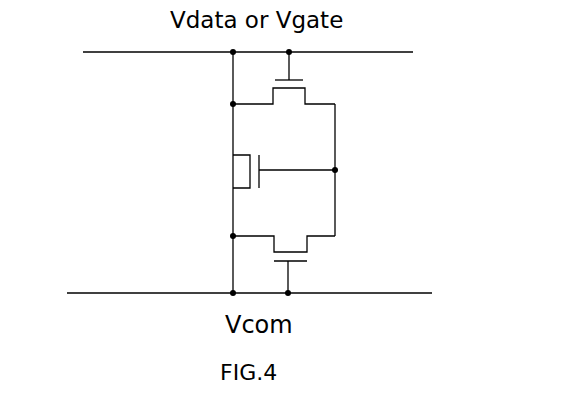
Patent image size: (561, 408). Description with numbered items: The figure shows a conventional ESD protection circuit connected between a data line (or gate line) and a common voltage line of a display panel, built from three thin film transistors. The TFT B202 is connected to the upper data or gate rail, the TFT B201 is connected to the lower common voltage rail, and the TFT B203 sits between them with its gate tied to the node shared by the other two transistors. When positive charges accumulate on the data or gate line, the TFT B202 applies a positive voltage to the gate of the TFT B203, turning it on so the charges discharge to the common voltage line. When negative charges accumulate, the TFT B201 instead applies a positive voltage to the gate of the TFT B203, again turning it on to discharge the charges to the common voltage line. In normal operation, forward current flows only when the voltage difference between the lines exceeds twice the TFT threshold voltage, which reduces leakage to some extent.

The TFT B202 is at (316, 80).
The TFT B203 is at (228, 172).
The TFT B201 is at (318, 260).